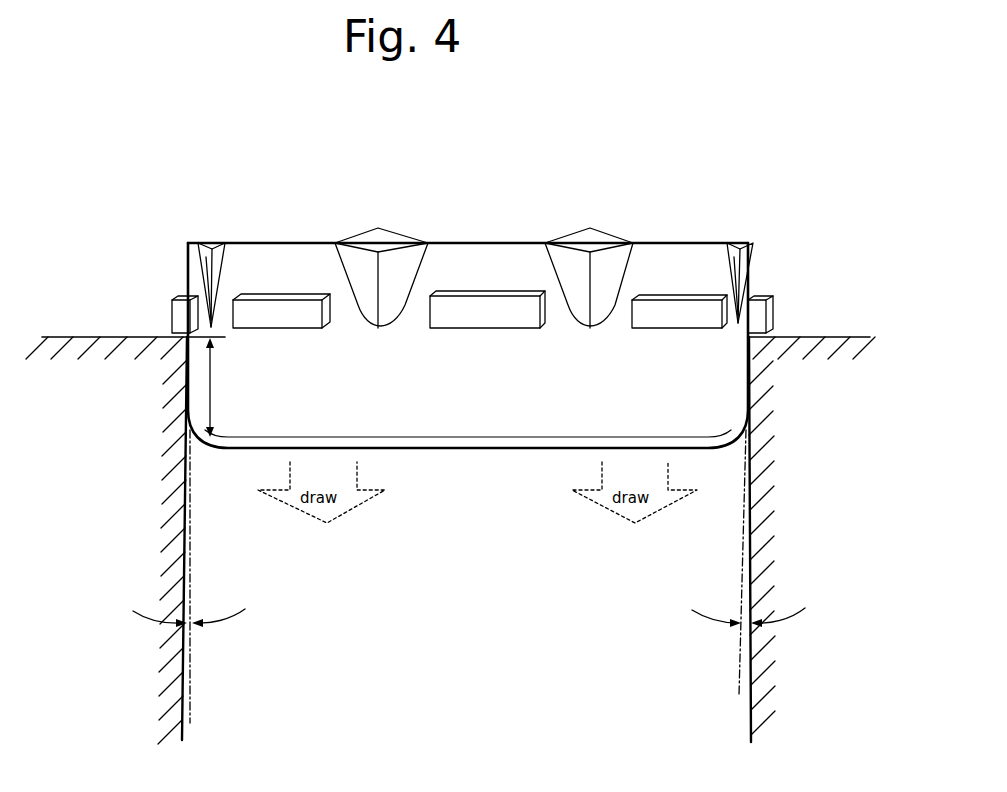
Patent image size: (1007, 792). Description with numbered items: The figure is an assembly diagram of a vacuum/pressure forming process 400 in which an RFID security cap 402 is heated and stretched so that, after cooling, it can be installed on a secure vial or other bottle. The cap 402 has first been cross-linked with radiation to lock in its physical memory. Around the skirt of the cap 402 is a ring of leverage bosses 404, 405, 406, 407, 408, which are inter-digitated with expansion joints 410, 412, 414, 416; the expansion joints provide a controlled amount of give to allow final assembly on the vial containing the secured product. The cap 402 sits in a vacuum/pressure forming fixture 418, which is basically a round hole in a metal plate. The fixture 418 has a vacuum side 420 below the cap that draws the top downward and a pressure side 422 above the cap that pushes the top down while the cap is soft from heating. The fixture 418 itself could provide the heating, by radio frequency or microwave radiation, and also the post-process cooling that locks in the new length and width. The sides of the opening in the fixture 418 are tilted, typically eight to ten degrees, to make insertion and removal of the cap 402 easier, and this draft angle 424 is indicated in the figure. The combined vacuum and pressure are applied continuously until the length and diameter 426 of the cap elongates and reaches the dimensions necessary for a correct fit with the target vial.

The vacuum/pressure forming process 400 is at (251, 118).
The RFID security cap 402 is at (623, 405).
The leverage boss 404 is at (172, 315).
The leverage boss 405 is at (296, 299).
The leverage boss 406 is at (503, 328).
The leverage boss 407 is at (687, 328).
The leverage boss 408 is at (770, 317).
The expansion joint 410 is at (215, 247).
The expansion joint 412 is at (349, 246).
The expansion joint 414 is at (582, 232).
The expansion joint 416 is at (753, 257).
The vacuum/pressure forming fixture 418 is at (106, 475).
The vacuum side 420 is at (504, 622).
The pressure side 422 is at (584, 173).
The draft angle 424 is at (192, 658).
The length and diameter 426 is at (210, 370).